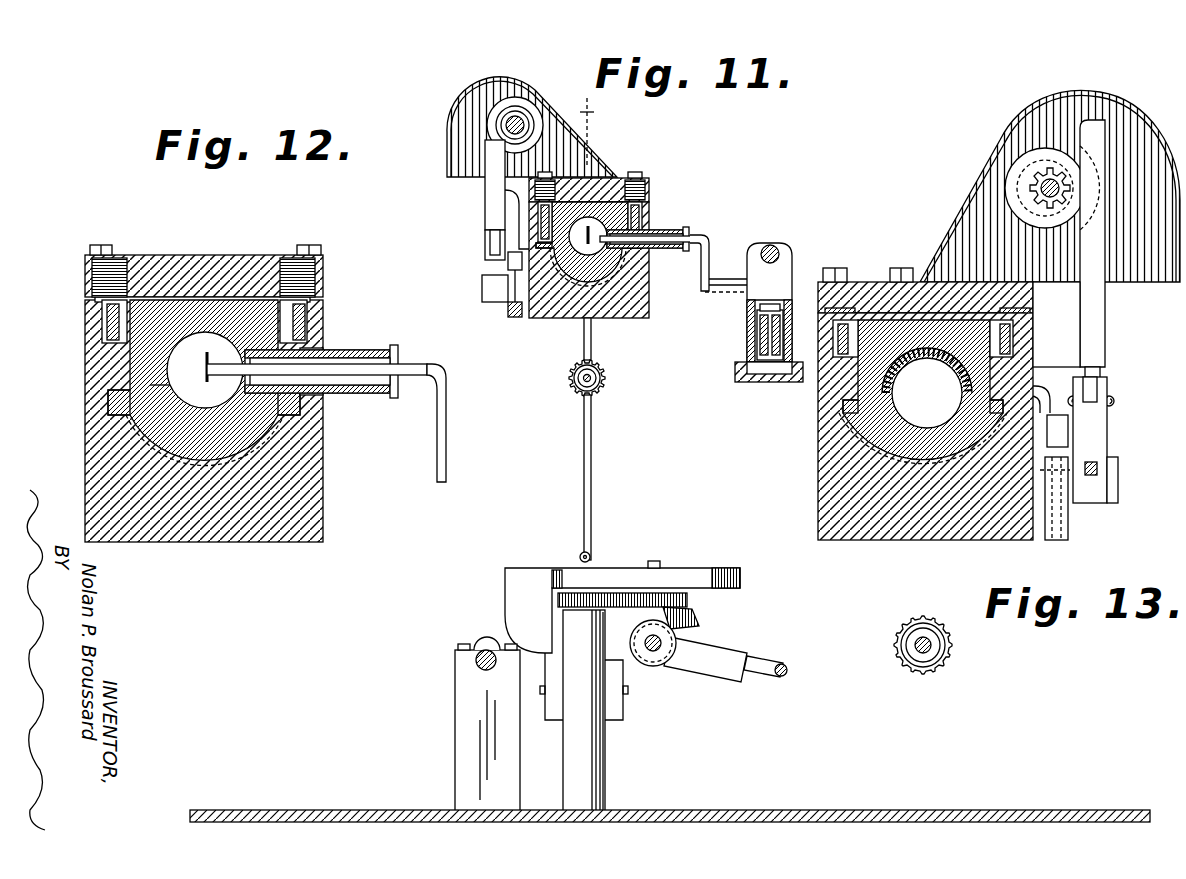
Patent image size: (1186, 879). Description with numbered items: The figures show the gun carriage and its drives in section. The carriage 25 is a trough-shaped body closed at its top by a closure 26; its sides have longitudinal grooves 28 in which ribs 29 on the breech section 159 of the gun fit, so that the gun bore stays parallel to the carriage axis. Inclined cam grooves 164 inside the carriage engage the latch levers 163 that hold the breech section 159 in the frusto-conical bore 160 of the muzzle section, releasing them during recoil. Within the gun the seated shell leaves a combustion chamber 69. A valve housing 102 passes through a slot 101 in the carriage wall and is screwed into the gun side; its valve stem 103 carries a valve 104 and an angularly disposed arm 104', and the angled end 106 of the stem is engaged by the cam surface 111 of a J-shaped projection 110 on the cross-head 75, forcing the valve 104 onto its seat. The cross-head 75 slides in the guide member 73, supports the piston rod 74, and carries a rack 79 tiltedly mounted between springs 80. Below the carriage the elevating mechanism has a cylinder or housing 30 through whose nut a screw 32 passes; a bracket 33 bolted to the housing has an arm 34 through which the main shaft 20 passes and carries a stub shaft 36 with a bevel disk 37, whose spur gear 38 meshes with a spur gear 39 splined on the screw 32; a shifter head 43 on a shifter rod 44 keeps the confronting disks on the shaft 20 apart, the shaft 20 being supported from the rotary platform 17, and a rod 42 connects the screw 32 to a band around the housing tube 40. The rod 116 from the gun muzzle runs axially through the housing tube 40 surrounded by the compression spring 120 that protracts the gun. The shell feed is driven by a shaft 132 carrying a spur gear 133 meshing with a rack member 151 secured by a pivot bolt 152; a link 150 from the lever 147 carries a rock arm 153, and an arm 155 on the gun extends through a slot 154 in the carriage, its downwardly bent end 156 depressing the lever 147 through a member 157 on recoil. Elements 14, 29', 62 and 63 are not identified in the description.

In FIG. 11, the shaft 14 is at (568, 335).
In FIG. 11, the rotary platform 17 is at (345, 810).
In FIG. 11, the main shaft 20 is at (657, 652).
In FIG. 12, the carriage 25 is at (219, 532).
In FIG. 11, the carriage 25 is at (640, 277).
In FIG. 13, the carriage 25 is at (928, 527).
In FIG. 12, the closure 26 is at (202, 257).
In FIG. 11, the closure 26 is at (618, 177).
In FIG. 13, the closure 26 is at (868, 283).
In FIG. 12, the grooves 28 is at (107, 403).
In FIG. 11, the grooves 28 is at (547, 253).
In FIG. 13, the grooves 28 is at (843, 405).
In FIG. 12, the ribs 29 is at (165, 380).
In FIG. 11, the ribs 29 is at (583, 276).
In FIG. 13, the ribs 29 is at (889, 411).
In FIG. 11, the post surface 29' is at (639, 712).
In FIG. 11, the cylinder or housing 30 is at (587, 748).
In FIG. 11, the screw 32 is at (577, 562).
In FIG. 11, the bracket 33 is at (557, 722).
In FIG. 11, the arm 34 is at (683, 625).
In FIG. 11, the stub shaft 36 is at (660, 565).
In FIG. 11, the bevel disk 37 is at (693, 610).
In FIG. 11, the spur gear 38 is at (693, 597).
In FIG. 11, the spur gear 39 is at (598, 600).
In FIG. 11, the housing tube 40 is at (605, 382).
In FIG. 13, the housing tube 40 is at (950, 660).
In FIG. 11, the rod 42 is at (592, 478).
In FIG. 11, the shifter head 43 is at (723, 670).
In FIG. 11, the shifter rod 44 is at (782, 668).
In FIG. 11, the support post 62 is at (480, 672).
In FIG. 11, the pivot boss 63 is at (480, 643).
In FIG. 12, the combustion chamber 69 is at (175, 386).
In FIG. 11, the guide member 73 is at (762, 382).
In FIG. 11, the piston rod 74 is at (771, 244).
In FIG. 11, the cross-head 75 is at (783, 280).
In FIG. 11, the rack 79 is at (758, 365).
In FIG. 11, the springs 80 is at (777, 317).
In FIG. 12, the slot 101 is at (313, 388).
In FIG. 12, the valve housing 102 is at (357, 347).
In FIG. 11, the valve housing 102 is at (668, 228).
In FIG. 12, the valve stem 103 is at (358, 367).
In FIG. 11, the valve stem 103 is at (647, 235).
In FIG. 12, the valve 104 is at (140, 359).
In FIG. 11, the valve 104 is at (613, 191).
In FIG. 12, the angularly disposed arm 104' is at (307, 384).
In FIG. 11, the angularly disposed arm 104' is at (611, 308).
In FIG. 12, the angled end 106 is at (448, 429).
In FIG. 11, the angled end 106 is at (711, 246).
In FIG. 11, the J-shaped projection 110 is at (737, 286).
In FIG. 11, the cam surface 111 is at (717, 293).
In FIG. 11, the rod 116 is at (580, 395).
In FIG. 13, the rod 116 is at (927, 655).
In FIG. 11, the coiled compression spring 120 is at (603, 362).
In FIG. 13, the coiled compression spring 120 is at (908, 657).
In FIG. 13, the shaft 132 is at (1037, 185).
In FIG. 11, the spur gear 133 is at (527, 115).
In FIG. 13, the spur gear 133 is at (1043, 168).
In FIG. 13, the lever 147 is at (1118, 492).
In FIG. 11, the link 150 is at (492, 257).
In FIG. 13, the link 150 is at (1093, 438).
In FIG. 11, the rack member 151 is at (498, 93).
In FIG. 13, the rack member 151 is at (1092, 262).
In FIG. 11, the pivot bolt 152 is at (483, 245).
In FIG. 13, the pivot bolt 152 is at (1097, 467).
In FIG. 13, the rock arm 153 is at (1015, 527).
In FIG. 13, the slot 154 is at (1023, 363).
In FIG. 11, the arm 155 is at (517, 215).
In FIG. 13, the arm 155 is at (1040, 390).
In FIG. 11, the downwardly bent end 156 is at (502, 303).
In FIG. 13, the downwardly bent end 156 is at (1102, 412).
In FIG. 13, the member 157 is at (1063, 522).
In FIG. 12, the breech section 159 is at (240, 443).
In FIG. 11, the breech section 159 is at (612, 275).
In FIG. 13, the breech section 159 is at (900, 462).
In FIG. 13, the frusto-conical bore 160 is at (923, 418).
In FIG. 12, the latch levers 163 is at (108, 308).
In FIG. 11, the latch levers 163 is at (637, 205).
In FIG. 13, the latch levers 163 is at (1007, 342).
In FIG. 12, the inclined cam groove 164 is at (118, 257).
In FIG. 11, the inclined cam groove 164 is at (643, 175).
In FIG. 13, the inclined cam groove 164 is at (1030, 313).